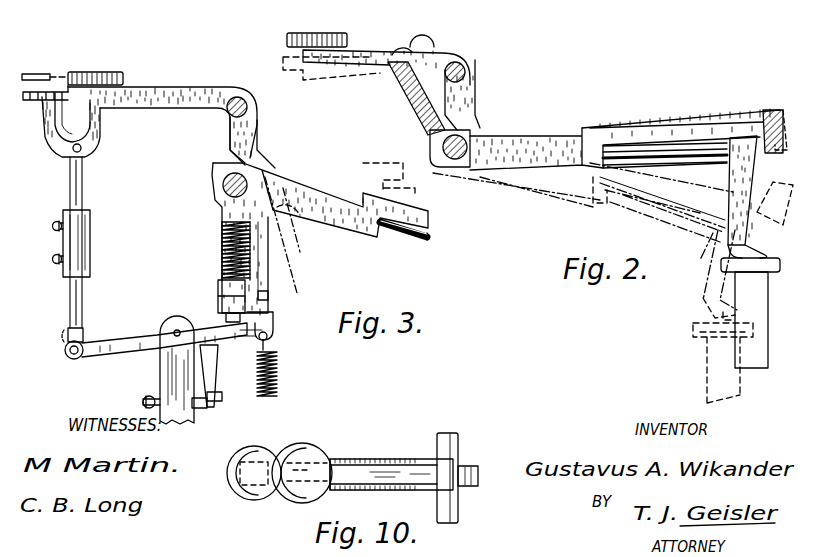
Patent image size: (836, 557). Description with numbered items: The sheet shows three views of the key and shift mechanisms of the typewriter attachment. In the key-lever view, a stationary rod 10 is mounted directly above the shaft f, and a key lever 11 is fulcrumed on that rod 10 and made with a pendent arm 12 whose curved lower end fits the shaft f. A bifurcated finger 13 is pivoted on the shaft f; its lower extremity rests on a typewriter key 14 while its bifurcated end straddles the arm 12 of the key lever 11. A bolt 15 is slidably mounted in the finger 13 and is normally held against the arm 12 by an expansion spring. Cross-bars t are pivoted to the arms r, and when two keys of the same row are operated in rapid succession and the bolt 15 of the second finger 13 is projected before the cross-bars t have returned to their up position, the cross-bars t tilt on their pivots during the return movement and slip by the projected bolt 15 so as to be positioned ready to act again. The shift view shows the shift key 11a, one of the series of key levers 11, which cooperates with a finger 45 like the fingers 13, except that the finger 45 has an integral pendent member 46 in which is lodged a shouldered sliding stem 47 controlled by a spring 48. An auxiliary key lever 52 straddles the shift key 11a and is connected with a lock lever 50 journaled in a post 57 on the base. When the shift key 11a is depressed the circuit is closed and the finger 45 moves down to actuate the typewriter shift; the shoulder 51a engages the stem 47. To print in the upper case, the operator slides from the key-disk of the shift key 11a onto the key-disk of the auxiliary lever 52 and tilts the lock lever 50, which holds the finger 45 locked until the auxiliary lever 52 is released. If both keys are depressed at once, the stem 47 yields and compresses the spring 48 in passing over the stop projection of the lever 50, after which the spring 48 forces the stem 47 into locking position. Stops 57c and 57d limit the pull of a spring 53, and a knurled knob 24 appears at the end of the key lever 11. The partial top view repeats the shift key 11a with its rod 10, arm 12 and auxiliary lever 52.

In FIG. 3, the stationary rod 10 is at (248, 104).
In FIG. 2, the stationary rod 10 is at (458, 62).
In FIG. 10, the stationary rod 10 is at (456, 445).
In FIG. 2, the key lever 11 is at (360, 51).
In FIG. 3, the shift key 11a is at (135, 85).
In FIG. 10, the shift key 11a is at (400, 472).
In FIG. 3, the pendent arm 12 is at (257, 137).
In FIG. 2, the pendent arm 12 is at (470, 97).
In FIG. 10, the pendent arm 12 is at (470, 487).
In FIG. 2, the bifurcated finger 13 is at (592, 128).
In FIG. 2, the typewriter key 14 is at (760, 291).
In FIG. 2, the bolt 15 is at (640, 157).
In FIG. 2, the knob 24 is at (310, 42).
In FIG. 3, the finger 45 is at (373, 240).
In FIG. 3, the pendent member 46 is at (265, 297).
In FIG. 3, the sliding stem 47 is at (223, 313).
In FIG. 3, the spring 48 is at (226, 258).
In FIG. 3, the lock lever 50 is at (116, 347).
In FIG. 3, the shoulder 51a is at (277, 315).
In FIG. 3, the auxiliary key lever 52 is at (55, 138).
In FIG. 10, the auxiliary key lever 52 is at (365, 459).
In FIG. 3, the spring 53 is at (278, 381).
In FIG. 3, the post 57 is at (167, 353).
In FIG. 3, the stop 57c is at (222, 396).
In FIG. 3, the stop 57d is at (198, 415).
In FIG. 2, the shaft f is at (440, 144).
In FIG. 2, the arm r is at (747, 110).
In FIG. 2, the cross-bar t is at (782, 140).